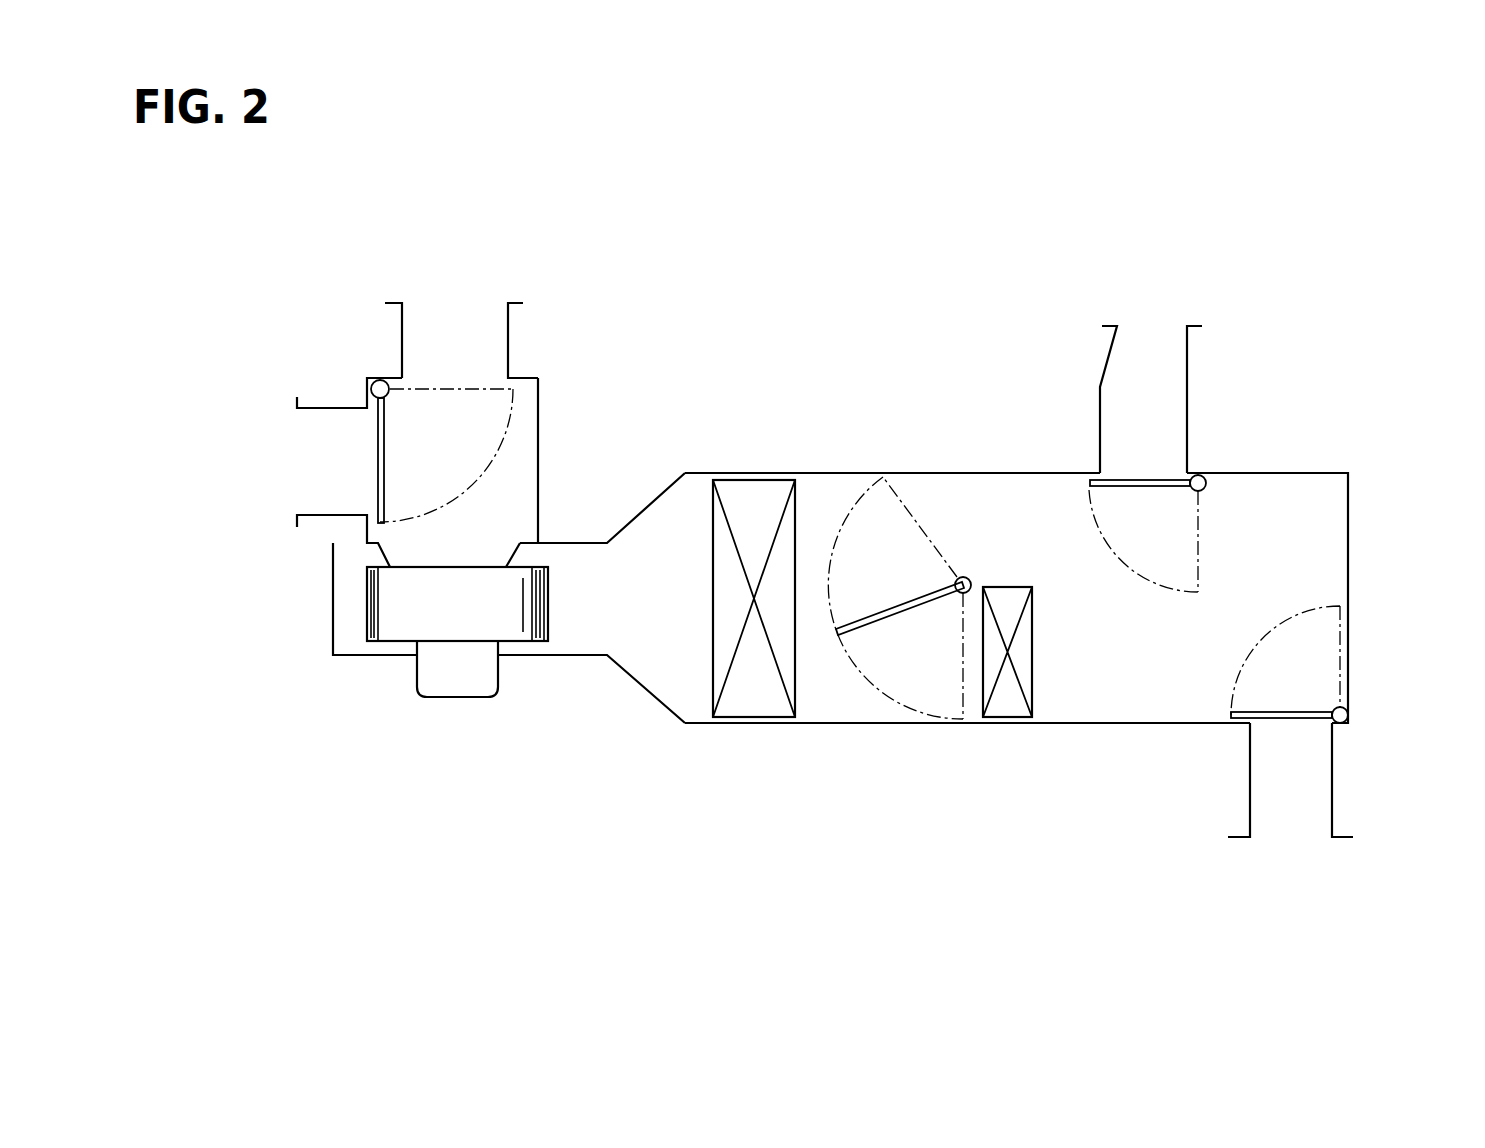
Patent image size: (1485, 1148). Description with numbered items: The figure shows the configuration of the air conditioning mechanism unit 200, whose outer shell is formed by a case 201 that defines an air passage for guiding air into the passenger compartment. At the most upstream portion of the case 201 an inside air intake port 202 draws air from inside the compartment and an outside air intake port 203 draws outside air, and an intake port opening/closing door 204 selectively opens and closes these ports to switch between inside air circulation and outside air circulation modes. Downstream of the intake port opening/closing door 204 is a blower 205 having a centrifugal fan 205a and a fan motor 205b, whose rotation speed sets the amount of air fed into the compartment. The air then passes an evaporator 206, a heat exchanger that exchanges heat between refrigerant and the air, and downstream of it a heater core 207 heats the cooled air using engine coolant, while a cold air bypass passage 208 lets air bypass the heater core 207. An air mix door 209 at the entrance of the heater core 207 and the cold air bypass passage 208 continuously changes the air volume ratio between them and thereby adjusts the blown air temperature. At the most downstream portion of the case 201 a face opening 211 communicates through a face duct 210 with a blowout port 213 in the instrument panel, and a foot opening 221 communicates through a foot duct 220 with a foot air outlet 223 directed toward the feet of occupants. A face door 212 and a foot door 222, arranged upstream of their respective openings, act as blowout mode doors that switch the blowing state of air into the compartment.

The air conditioning mechanism unit 200 is at (758, 430).
The case 201 is at (831, 473).
The inside air intake port 202 is at (458, 353).
The outside air intake port 203 is at (337, 453).
The intake port opening/closing door 204 is at (373, 468).
The blower 205 is at (503, 788).
The centrifugal fan 205a is at (400, 620).
The fan motor 205b is at (458, 672).
The evaporator 206 is at (757, 703).
The heater core 207 is at (1008, 703).
The cold air bypass passage 208 is at (997, 530).
The air mix door 209 is at (903, 613).
The face duct 210 is at (1112, 353).
The face opening 211 is at (1140, 472).
The face door 212 is at (1110, 487).
The blowout port 213 is at (1150, 328).
The foot duct 220 is at (1248, 798).
The foot opening 221 is at (1275, 743).
The foot door 222 is at (1298, 720).
The foot air outlet 223 is at (1290, 817).